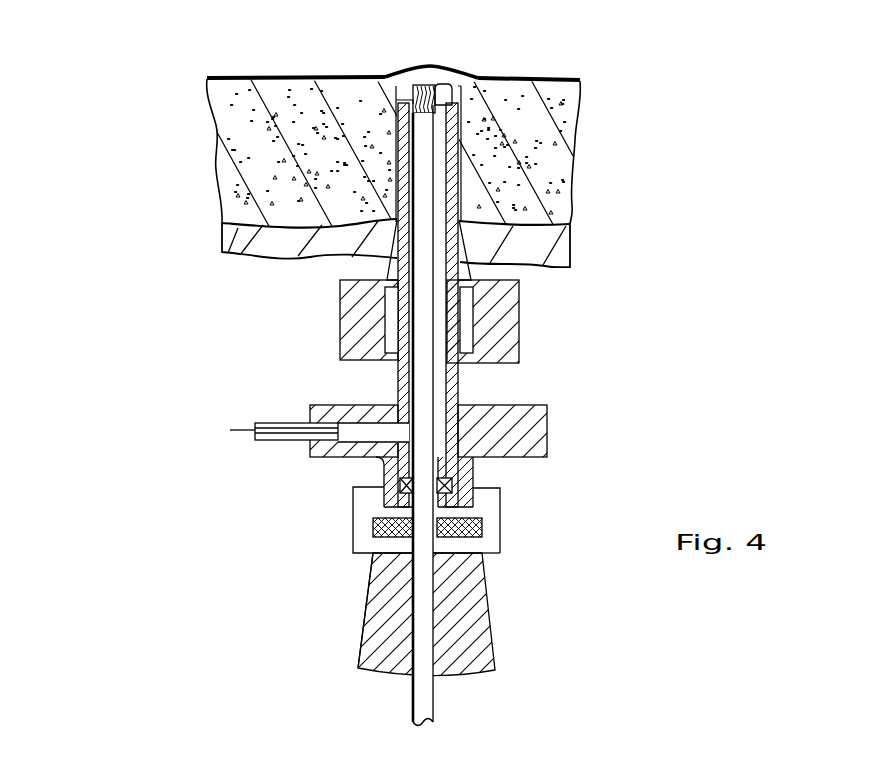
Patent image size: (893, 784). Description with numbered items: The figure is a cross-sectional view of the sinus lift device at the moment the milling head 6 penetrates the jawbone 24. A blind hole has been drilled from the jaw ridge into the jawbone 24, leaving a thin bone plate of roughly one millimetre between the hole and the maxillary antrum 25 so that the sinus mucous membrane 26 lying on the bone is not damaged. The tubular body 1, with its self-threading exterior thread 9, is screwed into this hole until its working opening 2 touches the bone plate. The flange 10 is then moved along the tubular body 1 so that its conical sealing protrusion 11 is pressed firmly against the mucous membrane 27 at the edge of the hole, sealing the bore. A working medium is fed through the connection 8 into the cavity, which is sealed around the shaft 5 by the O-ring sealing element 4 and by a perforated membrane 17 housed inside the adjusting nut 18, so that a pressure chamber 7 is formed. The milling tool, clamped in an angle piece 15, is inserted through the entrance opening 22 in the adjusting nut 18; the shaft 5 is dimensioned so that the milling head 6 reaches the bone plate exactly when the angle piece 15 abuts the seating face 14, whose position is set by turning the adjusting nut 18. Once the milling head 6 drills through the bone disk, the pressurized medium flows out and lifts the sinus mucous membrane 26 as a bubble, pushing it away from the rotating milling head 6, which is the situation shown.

The tubular body 1 is at (452, 375).
The working opening 2 is at (438, 94).
The sealing element 4 is at (453, 485).
The shaft of the milling tool 5 is at (427, 378).
The milling head 6 is at (404, 96).
The pressure chamber 7 is at (441, 262).
The connection 8 is at (277, 442).
The self-threading exterior thread 9 is at (462, 117).
The flange 10 is at (500, 348).
The conical sealing protrusion 11 is at (394, 268).
The seating face 14 is at (490, 557).
The angle piece 15 is at (463, 617).
The perforated membrane 17 is at (480, 528).
The adjusting nut 18 is at (362, 522).
The entrance opening 22 is at (372, 578).
The jawbone 24 is at (528, 172).
The maxillary antrum 25 is at (541, 44).
The sinus mucous membrane 26 is at (420, 68).
The mucous membrane 27 is at (537, 242).